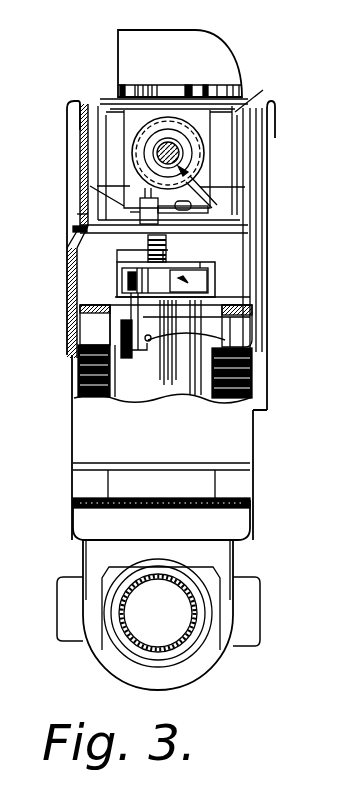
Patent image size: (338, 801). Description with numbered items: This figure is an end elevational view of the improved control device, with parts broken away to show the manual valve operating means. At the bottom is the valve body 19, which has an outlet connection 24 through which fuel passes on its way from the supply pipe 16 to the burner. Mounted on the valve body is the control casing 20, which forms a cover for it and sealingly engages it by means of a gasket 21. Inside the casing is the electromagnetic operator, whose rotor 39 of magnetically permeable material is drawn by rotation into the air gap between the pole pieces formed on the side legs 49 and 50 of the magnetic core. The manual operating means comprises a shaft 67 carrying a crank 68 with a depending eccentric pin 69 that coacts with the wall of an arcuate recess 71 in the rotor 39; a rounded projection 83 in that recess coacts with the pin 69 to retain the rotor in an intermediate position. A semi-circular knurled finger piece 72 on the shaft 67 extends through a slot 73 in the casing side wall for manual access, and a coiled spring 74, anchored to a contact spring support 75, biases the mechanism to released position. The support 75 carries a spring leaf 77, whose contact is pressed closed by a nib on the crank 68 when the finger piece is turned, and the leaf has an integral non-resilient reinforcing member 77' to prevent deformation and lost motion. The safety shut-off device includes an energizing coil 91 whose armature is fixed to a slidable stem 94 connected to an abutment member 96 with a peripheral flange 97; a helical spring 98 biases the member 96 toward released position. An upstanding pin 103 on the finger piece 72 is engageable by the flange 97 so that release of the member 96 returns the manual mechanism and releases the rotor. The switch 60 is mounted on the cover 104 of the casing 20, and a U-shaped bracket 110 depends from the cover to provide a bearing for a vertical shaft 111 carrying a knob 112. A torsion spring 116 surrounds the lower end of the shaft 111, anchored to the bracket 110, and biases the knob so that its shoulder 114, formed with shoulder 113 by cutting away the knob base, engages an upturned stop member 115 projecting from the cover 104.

The knob 112 is at (175, 48).
The vertical shaft 111 is at (162, 114).
The shoulder 113 is at (205, 88).
The shoulder 114 is at (126, 88).
The stop member 115 is at (142, 88).
The cover 104 is at (110, 100).
The helical spring 98 is at (180, 140).
The switch 60 is at (95, 153).
The slidable stem 94 is at (165, 150).
The U-shaped bracket 110 is at (210, 150).
The control casing 20 is at (260, 180).
The abutment member 96 is at (245, 189).
The upstanding pin 103 is at (97, 186).
The slot 73 is at (74, 216).
The finger piece 72 is at (75, 228).
The energizing coil 91 is at (212, 192).
The torsion spring 116 is at (196, 214).
The flange 97 is at (173, 208).
The shaft 67 is at (148, 242).
The coiled spring 74 is at (145, 247).
The crank 68 is at (130, 277).
The eccentric pin 69 is at (130, 297).
The contact spring support 75 is at (202, 264).
The reinforcing member 77' is at (220, 251).
The spring leaf 77 is at (211, 275).
The rotor 39 is at (214, 318).
The rounded projection 83 is at (200, 340).
The arcuate recess 71 is at (146, 352).
The side leg 50 is at (78, 372).
The side leg 49 is at (253, 378).
The gasket 21 is at (252, 508).
The valve body 19 is at (224, 560).
The outlet connection 24 is at (188, 652).
The supply pipe 16 is at (130, 613).